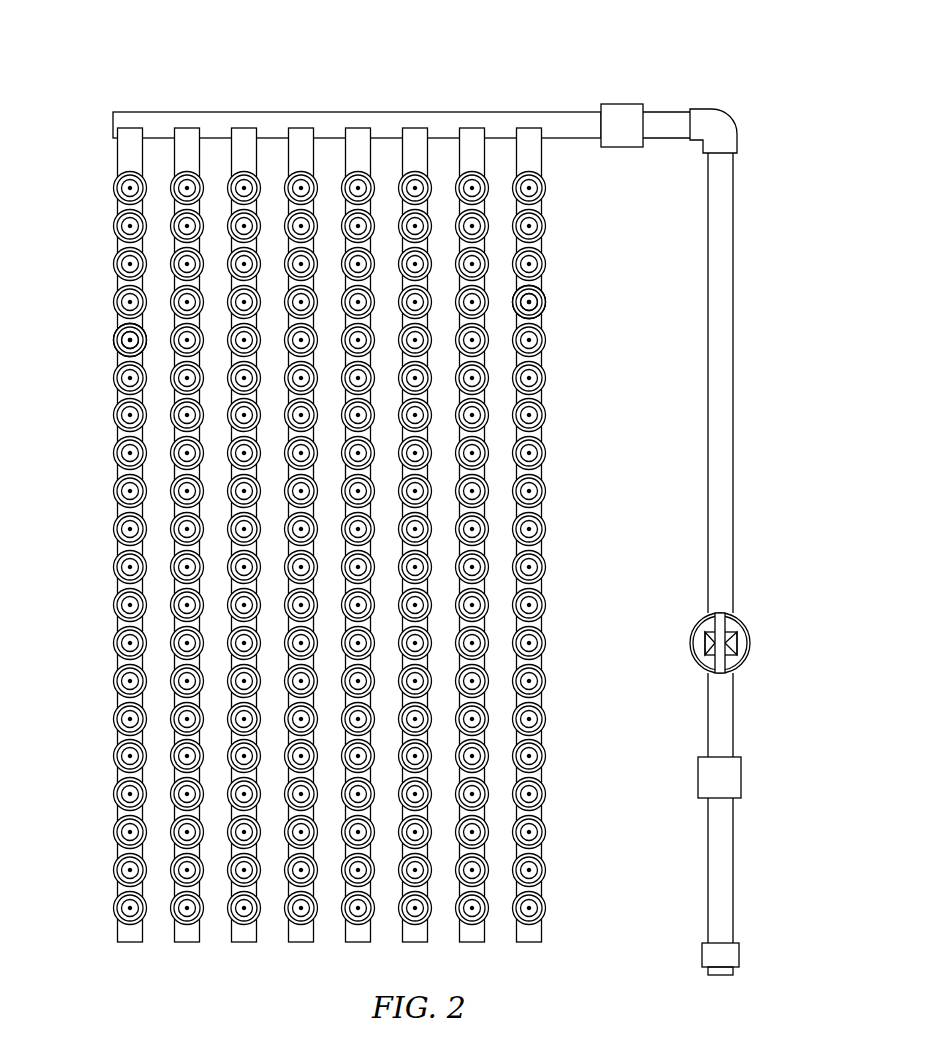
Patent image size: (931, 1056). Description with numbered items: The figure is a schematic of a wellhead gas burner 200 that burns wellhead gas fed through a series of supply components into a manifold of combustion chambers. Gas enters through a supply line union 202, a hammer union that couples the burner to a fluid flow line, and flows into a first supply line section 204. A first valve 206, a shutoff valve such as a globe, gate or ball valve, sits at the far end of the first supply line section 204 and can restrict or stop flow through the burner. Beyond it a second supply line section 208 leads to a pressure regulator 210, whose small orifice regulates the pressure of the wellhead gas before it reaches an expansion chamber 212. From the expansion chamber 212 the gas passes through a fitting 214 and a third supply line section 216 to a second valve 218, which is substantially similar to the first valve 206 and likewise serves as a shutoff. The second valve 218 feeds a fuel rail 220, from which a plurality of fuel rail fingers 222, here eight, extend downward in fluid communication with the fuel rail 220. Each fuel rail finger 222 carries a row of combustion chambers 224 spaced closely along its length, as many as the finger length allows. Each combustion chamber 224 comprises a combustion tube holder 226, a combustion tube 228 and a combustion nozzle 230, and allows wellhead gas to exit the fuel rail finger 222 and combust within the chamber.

The wellhead gas burner 200 is at (331, 507).
The supply line union 202 is at (740, 957).
The first supply line section 204 is at (734, 872).
The first valve 206 is at (742, 778).
The second supply line section 208 is at (734, 713).
The pressure regulator 210 is at (744, 620).
The expansion chamber 212 is at (734, 383).
The fitting 214 is at (735, 126).
The third supply line section 216 is at (680, 112).
The second valve 218 is at (628, 104).
The fuel rail 220 is at (211, 108).
The fuel rail finger 222 is at (118, 148).
The combustion chamber 224 is at (112, 320).
The combustion tube holder 226 is at (114, 338).
The combustion tube 228 is at (118, 350).
The combustion nozzle 230 is at (128, 340).